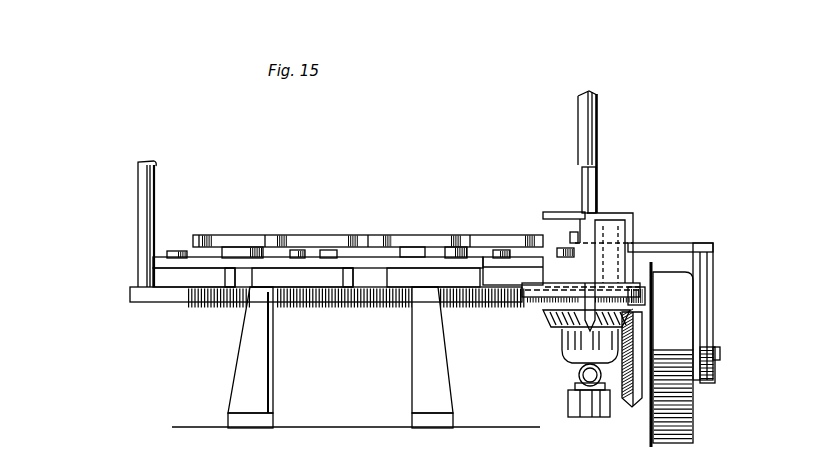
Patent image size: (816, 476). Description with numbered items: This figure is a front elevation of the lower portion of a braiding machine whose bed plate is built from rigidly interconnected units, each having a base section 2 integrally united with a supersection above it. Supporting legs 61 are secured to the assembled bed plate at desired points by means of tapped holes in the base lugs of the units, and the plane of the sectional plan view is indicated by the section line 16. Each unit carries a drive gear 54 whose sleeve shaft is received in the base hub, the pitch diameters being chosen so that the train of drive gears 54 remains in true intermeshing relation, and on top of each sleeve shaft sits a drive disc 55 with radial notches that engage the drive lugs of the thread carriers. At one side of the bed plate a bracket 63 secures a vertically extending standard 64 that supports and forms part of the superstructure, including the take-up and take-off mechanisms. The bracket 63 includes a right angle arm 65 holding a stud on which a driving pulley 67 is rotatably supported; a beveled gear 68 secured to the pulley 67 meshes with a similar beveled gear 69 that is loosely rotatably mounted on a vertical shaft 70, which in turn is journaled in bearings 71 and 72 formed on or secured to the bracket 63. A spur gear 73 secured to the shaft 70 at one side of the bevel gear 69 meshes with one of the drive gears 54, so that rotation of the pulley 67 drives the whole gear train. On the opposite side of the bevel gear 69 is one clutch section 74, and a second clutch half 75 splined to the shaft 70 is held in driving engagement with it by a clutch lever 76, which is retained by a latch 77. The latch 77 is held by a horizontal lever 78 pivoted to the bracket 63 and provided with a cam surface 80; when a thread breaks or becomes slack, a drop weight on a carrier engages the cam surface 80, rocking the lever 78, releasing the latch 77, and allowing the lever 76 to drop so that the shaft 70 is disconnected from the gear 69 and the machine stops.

The base section 2 is at (355, 278).
The section line 16— 16 is at (195, 169).
The drive gear 54 is at (213, 306).
The drive disc 55 is at (248, 238).
The supporting leg 61 is at (268, 352).
The bracket 63 is at (617, 287).
The standard 64 is at (157, 201).
The right angle arm 65 is at (711, 301).
The driving pulley 67 is at (694, 397).
The beveled gear 68 is at (633, 408).
The beveled gear 69 is at (552, 308).
The vertical shaft 70 is at (581, 107).
The bearing 71 is at (575, 244).
The bearing 72 is at (573, 417).
The spur gear 73 is at (646, 295).
The clutch section 74 is at (571, 333).
The clutch half 75 is at (580, 364).
The clutch lever 76 is at (579, 385).
The latch 77 is at (585, 182).
The horizontal lever 78 is at (628, 211).
The cam surface 80 is at (543, 216).